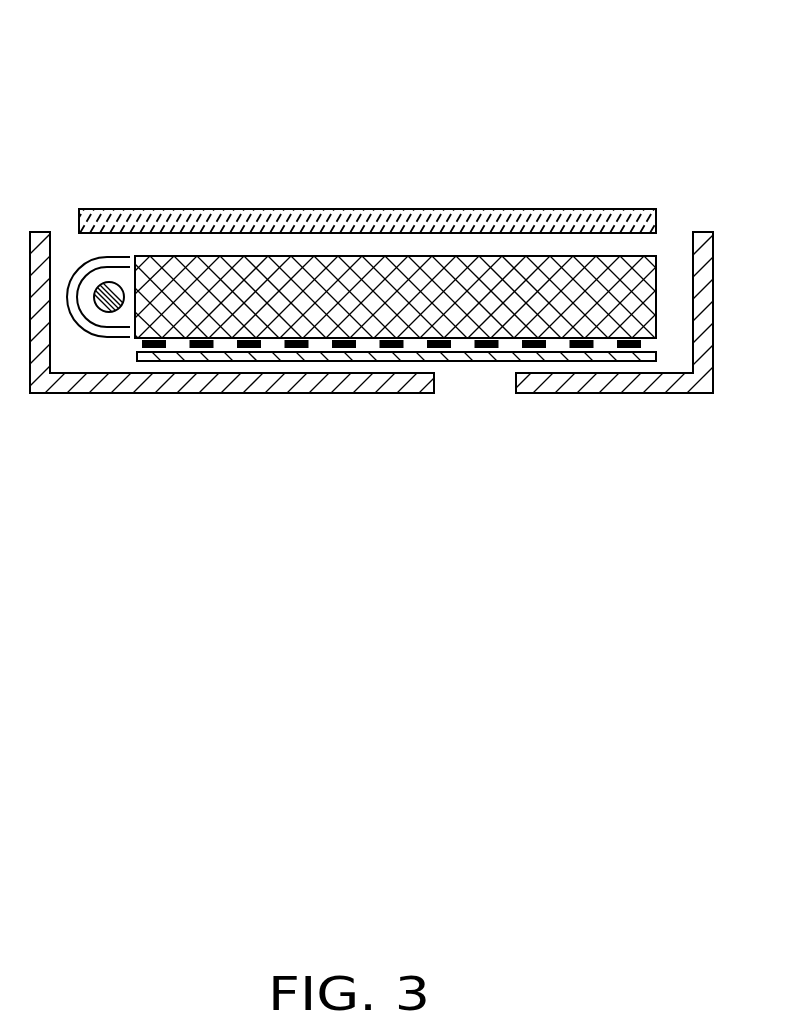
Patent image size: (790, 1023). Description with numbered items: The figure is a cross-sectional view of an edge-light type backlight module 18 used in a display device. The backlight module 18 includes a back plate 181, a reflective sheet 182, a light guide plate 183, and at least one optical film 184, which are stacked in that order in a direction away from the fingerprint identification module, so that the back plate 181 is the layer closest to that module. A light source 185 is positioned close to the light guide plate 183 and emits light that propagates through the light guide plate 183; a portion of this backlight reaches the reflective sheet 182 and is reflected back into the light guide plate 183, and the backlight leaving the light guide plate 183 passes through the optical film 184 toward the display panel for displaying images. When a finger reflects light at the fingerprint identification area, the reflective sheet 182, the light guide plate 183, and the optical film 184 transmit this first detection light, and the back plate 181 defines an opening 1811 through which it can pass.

The backlight module 18 is at (393, 41).
The back plate 181 is at (275, 380).
The opening 1811 is at (472, 387).
The reflective sheet 182 is at (180, 355).
The light guide plate 183 is at (223, 265).
The optical film 184 is at (328, 226).
The light source 185 is at (108, 287).